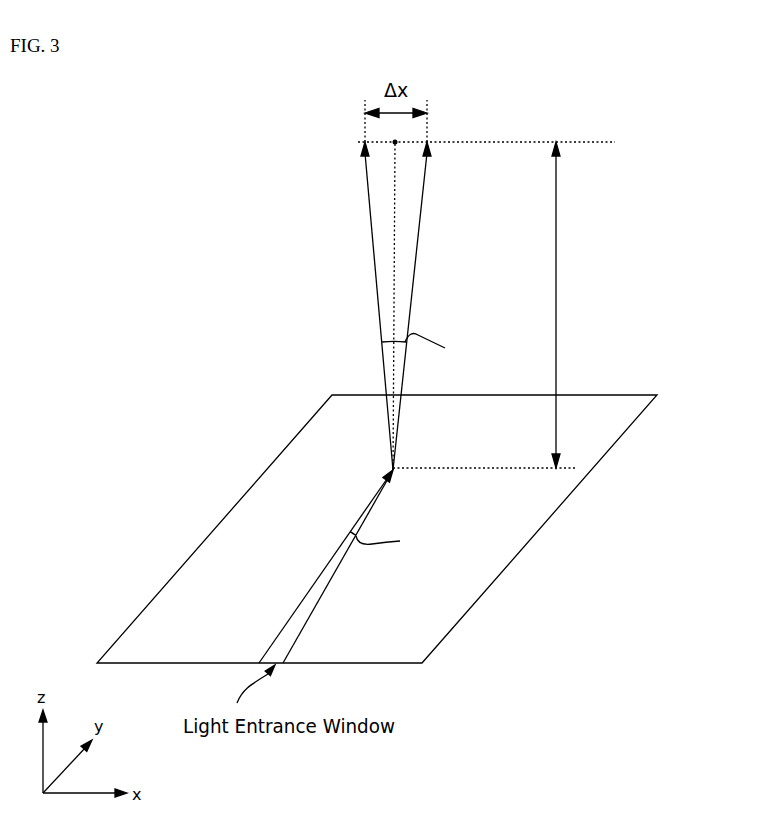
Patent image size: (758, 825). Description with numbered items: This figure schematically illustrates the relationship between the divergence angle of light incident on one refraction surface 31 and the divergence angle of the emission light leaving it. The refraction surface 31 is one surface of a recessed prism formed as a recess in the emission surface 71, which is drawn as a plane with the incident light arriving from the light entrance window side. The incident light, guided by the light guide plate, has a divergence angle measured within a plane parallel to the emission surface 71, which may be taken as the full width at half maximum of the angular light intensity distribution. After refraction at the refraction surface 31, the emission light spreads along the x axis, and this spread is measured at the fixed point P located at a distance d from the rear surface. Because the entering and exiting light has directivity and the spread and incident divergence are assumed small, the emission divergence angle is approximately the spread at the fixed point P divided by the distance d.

The refraction surface 31 is at (399, 467).
The emission surface 71 is at (657, 395).
The fixed point P is at (395, 142).
The distance d is at (565, 305).